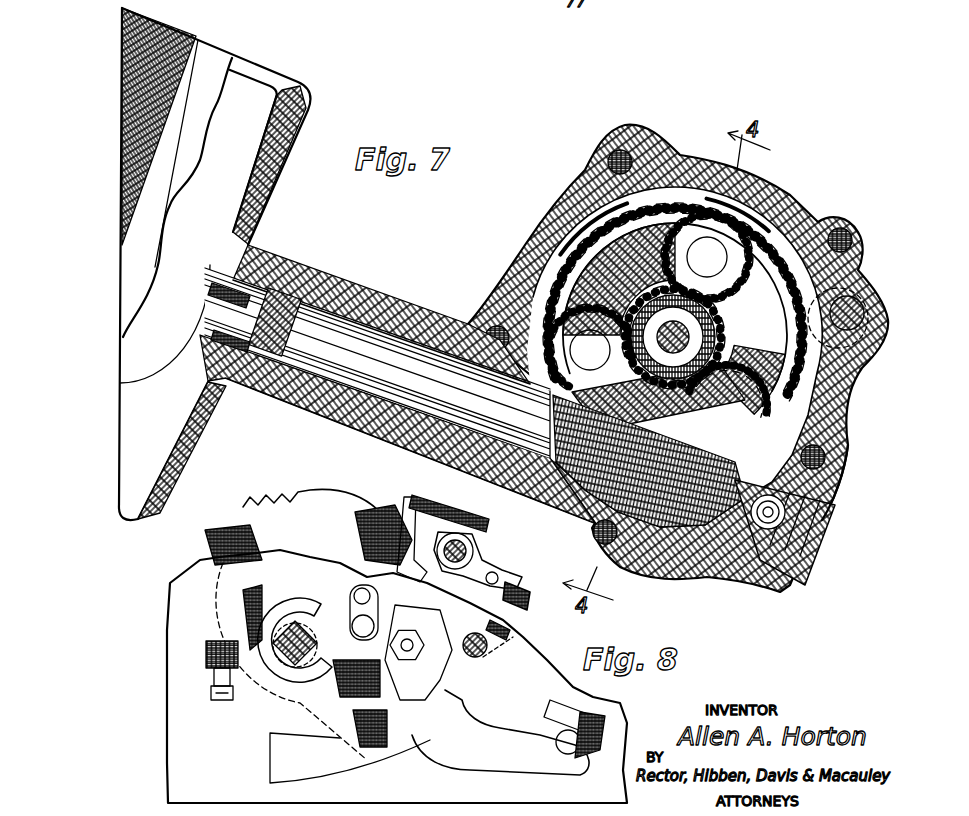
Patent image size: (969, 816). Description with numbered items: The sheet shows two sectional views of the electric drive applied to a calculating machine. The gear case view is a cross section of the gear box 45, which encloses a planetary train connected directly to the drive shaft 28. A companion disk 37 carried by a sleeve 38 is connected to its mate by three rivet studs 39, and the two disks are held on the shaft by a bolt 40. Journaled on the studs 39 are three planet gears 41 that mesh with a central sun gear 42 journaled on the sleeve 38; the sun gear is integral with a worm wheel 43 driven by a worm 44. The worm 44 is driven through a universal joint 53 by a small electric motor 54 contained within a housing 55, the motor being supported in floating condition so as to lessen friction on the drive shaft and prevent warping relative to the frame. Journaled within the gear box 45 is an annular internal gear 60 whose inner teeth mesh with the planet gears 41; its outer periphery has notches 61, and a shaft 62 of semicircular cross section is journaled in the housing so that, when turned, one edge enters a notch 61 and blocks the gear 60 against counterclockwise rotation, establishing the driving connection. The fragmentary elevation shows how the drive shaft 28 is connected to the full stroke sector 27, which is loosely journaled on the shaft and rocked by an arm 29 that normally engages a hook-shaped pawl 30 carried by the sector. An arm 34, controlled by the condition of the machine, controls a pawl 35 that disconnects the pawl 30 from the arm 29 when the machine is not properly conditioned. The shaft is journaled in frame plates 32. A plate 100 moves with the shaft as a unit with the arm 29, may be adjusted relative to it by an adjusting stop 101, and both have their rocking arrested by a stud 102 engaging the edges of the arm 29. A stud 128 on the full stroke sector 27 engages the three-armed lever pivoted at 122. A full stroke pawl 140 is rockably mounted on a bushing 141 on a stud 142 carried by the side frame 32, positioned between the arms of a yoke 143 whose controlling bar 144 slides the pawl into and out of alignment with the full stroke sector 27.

In FIG. 8, the full stroke sector 27 is at (318, 497).
In FIG. 8, the drive shaft 28 is at (296, 626).
In FIG. 8, the arm 29 is at (317, 687).
In FIG. 8, the hook-shaped pawl 30 is at (347, 743).
In FIG. 8, the frame plates 32 is at (203, 593).
In FIG. 8, the arm 34 is at (607, 755).
In FIG. 8, the pawl 35 is at (498, 748).
In FIG. 7, the companion disk 37 is at (641, 222).
In FIG. 7, the sleeve 38 is at (660, 318).
In FIG. 7, the rivet studs 39 is at (694, 261).
In FIG. 7, the bolt 40 is at (650, 328).
In FIG. 7, the planet gears 41 is at (557, 330).
In FIG. 7, the sun gear 42 is at (718, 316).
In FIG. 7, the worm wheel 43 is at (765, 494).
In FIG. 7, the worm 44 is at (660, 508).
In FIG. 7, the gear box 45 is at (678, 355).
In FIG. 7, the universal joint 53 is at (259, 303).
In FIG. 7, the electric motor 54 is at (200, 190).
In FIG. 7, the housing 55 is at (282, 78).
In FIG. 7, the annular internal gear 60 is at (597, 220).
In FIG. 7, the notches 61 is at (845, 392).
In FIG. 7, the shaft 62 is at (857, 318).
In FIG. 8, the plate 100 is at (217, 630).
In FIG. 8, the adjusting stop 101 is at (209, 693).
In FIG. 8, the stud 102 is at (360, 590).
In FIG. 8, the pivot 122 is at (478, 658).
In FIG. 8, the stud 128 is at (407, 638).
In FIG. 8, the full stroke pawl 140 is at (401, 517).
In FIG. 8, the bushing 141 is at (470, 557).
In FIG. 8, the stud 142 is at (466, 550).
In FIG. 8, the yoke 143 is at (455, 533).
In FIG. 8, the controlling bar 144 is at (418, 497).